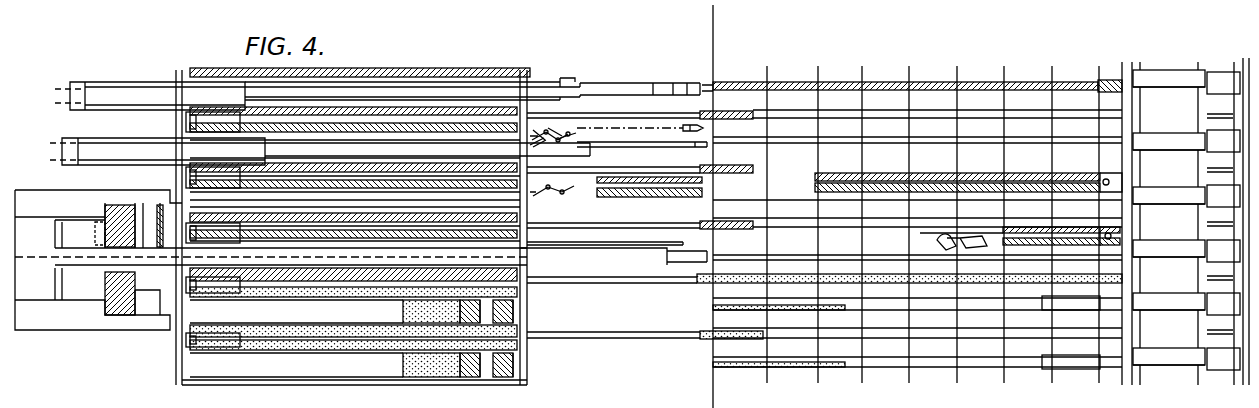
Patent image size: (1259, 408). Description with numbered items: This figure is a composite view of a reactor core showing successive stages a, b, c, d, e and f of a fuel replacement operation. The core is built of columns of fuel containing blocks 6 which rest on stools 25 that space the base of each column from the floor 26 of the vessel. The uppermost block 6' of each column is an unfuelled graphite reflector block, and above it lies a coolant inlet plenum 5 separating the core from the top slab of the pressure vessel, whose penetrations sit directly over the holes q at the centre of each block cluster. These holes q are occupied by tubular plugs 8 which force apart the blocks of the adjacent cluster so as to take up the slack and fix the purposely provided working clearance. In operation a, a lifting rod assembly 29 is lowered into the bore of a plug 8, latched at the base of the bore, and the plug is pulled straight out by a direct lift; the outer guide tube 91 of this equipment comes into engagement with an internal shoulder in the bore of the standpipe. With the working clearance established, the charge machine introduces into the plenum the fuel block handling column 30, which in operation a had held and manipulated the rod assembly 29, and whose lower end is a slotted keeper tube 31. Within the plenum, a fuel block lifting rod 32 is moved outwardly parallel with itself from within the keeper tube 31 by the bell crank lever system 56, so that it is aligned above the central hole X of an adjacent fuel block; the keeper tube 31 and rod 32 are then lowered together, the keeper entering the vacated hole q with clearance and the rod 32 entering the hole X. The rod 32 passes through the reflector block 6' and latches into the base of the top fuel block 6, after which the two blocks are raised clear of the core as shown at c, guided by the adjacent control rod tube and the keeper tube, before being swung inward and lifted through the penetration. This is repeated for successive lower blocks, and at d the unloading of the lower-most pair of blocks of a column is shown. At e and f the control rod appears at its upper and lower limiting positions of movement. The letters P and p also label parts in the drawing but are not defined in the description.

The outer guide tube 91 is at (571, 77).
The coolant inlet plenum 5 is at (625, 62).
The operation a is at (655, 73).
The operation b is at (648, 126).
The fuel block lifting rod 32 is at (668, 127).
The bell crank lever system 56 is at (565, 133).
The fuel block handling column 30 is at (568, 152).
The keeper tube 31 is at (617, 134).
The operation c is at (640, 174).
The operation d is at (660, 237).
The operation e is at (662, 273).
The operation f is at (613, 324).
The guide rod P is at (827, 111).
The rod p is at (725, 288).
The holes at the centre of the block cluster q is at (788, 80).
The central hole in fuel block X is at (897, 152).
The lifting rod assembly 29 is at (1098, 80).
The uppermost reflector block 6' is at (729, 206).
The fuel containing block 6 is at (933, 210).
The tubular plug 8 is at (990, 78).
The stool 25 is at (1172, 78).
The floor 26 is at (1244, 75).